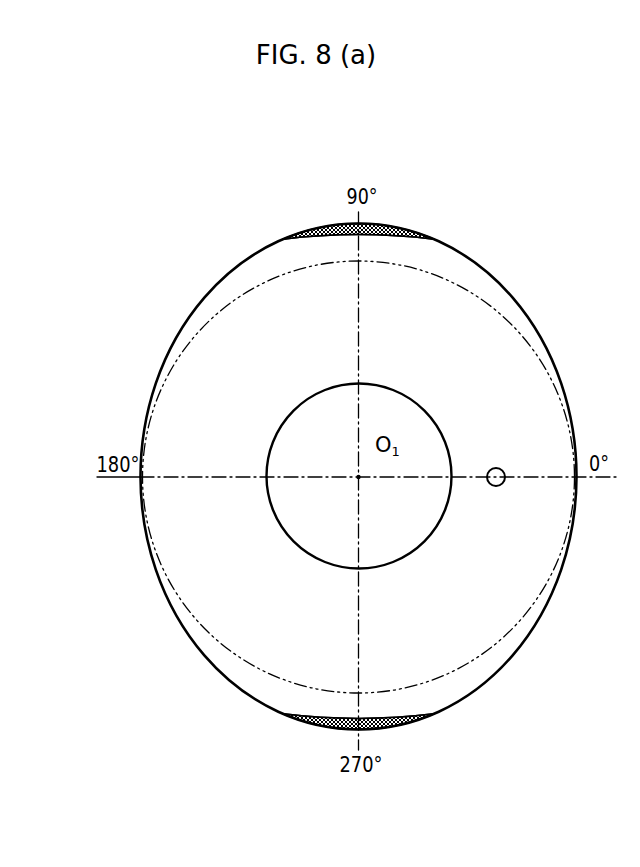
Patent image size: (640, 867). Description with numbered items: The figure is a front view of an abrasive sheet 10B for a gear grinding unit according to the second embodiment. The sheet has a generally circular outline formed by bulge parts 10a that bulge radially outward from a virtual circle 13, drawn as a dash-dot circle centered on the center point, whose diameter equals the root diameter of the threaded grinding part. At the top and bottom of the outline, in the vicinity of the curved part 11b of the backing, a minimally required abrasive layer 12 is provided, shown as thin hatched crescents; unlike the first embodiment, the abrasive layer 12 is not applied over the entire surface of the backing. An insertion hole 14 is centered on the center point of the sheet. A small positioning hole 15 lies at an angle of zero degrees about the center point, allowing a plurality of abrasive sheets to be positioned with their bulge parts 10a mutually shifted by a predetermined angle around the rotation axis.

The abrasive sheet 10B is at (245, 225).
The bulge part 10a is at (437, 247).
The curved part 11b is at (325, 228).
The abrasive layer 12 is at (368, 228).
The virtual circle 13 is at (543, 364).
The insertion hole 14 is at (405, 560).
The positioning hole 15 is at (503, 483).